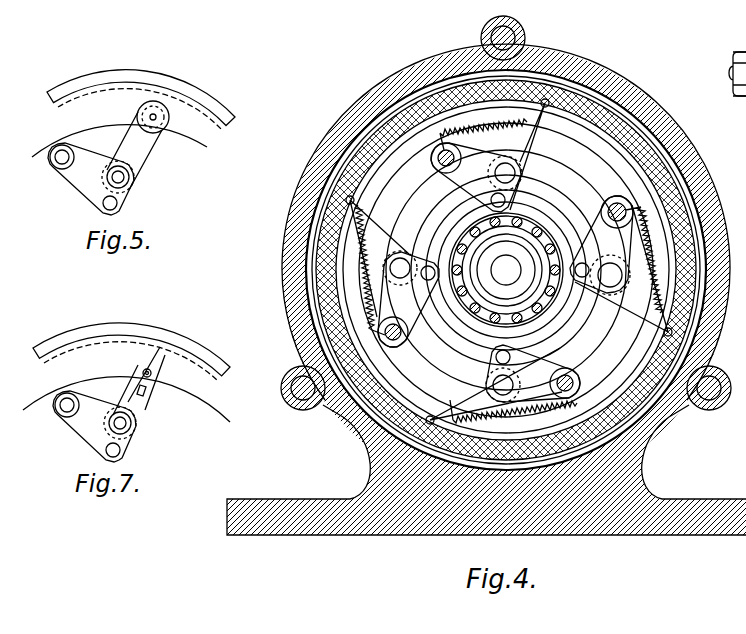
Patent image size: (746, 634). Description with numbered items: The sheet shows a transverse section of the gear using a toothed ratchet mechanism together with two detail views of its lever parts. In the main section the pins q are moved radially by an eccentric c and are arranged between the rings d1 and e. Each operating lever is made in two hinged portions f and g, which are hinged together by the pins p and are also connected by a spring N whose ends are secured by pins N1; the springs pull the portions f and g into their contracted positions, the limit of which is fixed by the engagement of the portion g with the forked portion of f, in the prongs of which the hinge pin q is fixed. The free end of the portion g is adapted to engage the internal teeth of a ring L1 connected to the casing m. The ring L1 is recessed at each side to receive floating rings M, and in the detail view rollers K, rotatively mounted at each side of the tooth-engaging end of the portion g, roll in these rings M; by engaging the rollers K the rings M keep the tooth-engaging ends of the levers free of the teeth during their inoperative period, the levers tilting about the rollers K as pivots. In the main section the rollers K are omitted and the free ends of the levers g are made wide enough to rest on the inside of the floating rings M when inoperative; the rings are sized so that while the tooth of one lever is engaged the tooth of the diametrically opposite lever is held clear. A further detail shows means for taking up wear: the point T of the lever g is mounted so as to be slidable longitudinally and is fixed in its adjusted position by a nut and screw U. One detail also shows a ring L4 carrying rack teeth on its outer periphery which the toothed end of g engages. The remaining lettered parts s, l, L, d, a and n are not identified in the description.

In FIG. 4, the bolt lug s is at (516, 32).
In FIG. 4, the housing l is at (686, 138).
In FIG. 4, the brake band L is at (702, 307).
In FIG. 7, the brake band L is at (112, 322).
In FIG. 4, the floating ring M is at (682, 212).
In FIG. 5, the floating ring M is at (203, 100).
In FIG. 7, the floating ring M is at (147, 333).
In FIG. 4, the hinged lever portion f is at (483, 156).
In FIG. 5, the hinged lever portion f is at (80, 186).
In FIG. 7, the hinged lever portion f is at (85, 436).
In FIG. 4, the hinged lever portion g is at (528, 150).
In FIG. 5, the hinged lever portion g is at (140, 145).
In FIG. 7, the hinged lever portion g is at (145, 404).
In FIG. 4, the eccentric c is at (528, 238).
In FIG. 4, the bearing race d is at (482, 258).
In FIG. 4, the shaft a is at (507, 272).
In FIG. 4, the hinge pin q is at (432, 266).
In FIG. 4, the pin p is at (405, 260).
In FIG. 4, the spring pin n is at (400, 345).
In FIG. 4, the spring N is at (366, 215).
In FIG. 4, the pin N1 is at (352, 203).
In FIG. 4, the ring e is at (448, 336).
In FIG. 4, the ring d1 is at (478, 352).
In FIG. 4, the casing m is at (737, 98).
In FIG. 4, the toothed ring L1 is at (738, 86).
In FIG. 5, the toothed ring L4 is at (133, 70).
In FIG. 5, the roller K is at (170, 120).
In FIG. 7, the nut and screw U is at (143, 371).
In FIG. 7, the lever point T is at (158, 362).